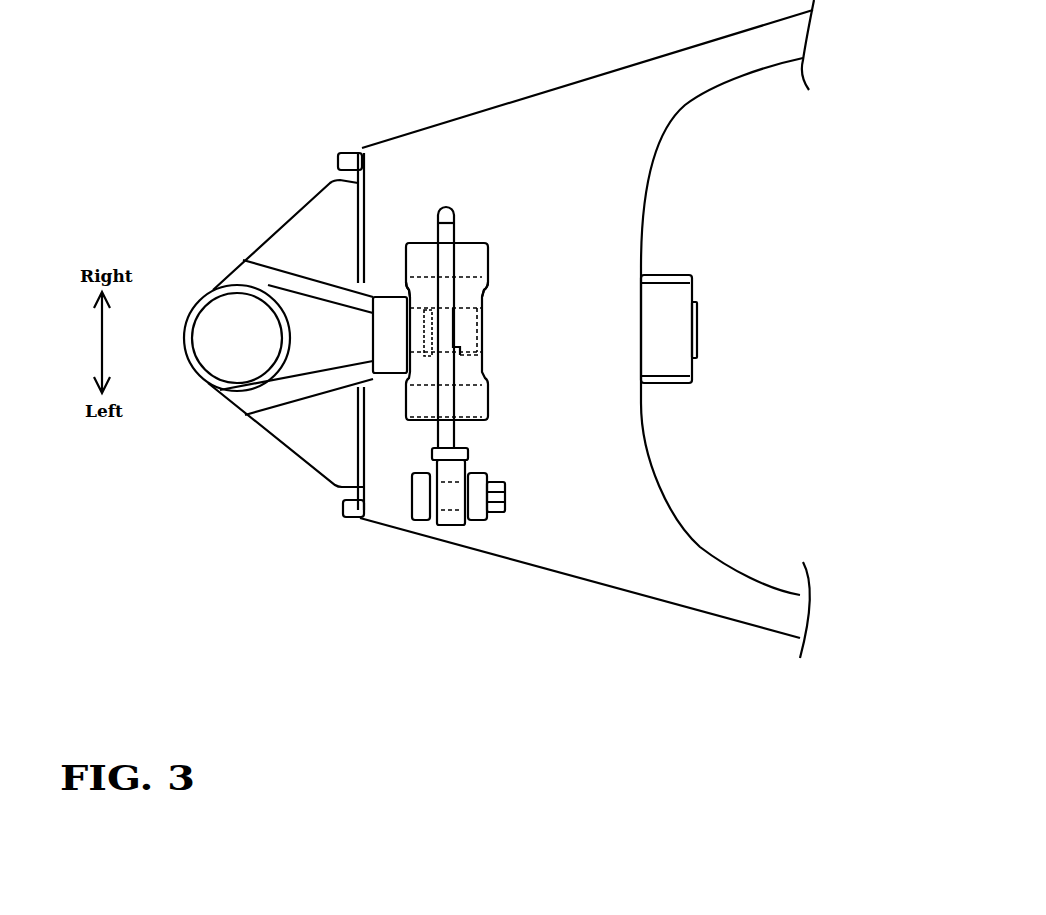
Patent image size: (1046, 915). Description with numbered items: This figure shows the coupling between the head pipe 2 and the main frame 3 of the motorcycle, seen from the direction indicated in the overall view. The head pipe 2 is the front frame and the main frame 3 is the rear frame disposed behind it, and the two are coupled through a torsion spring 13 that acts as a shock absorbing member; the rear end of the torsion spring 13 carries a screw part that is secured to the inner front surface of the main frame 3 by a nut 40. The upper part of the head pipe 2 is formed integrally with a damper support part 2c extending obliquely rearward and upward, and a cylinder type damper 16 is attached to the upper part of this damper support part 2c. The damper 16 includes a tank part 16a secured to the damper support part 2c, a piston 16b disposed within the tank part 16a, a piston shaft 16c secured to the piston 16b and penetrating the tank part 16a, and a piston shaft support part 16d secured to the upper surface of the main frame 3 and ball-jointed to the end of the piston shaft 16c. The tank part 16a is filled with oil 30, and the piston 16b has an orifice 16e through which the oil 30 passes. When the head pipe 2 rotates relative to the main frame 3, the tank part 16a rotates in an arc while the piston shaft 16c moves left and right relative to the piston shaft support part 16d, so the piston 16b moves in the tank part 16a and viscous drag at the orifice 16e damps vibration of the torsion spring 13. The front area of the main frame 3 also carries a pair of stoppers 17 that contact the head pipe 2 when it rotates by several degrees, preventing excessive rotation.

The head pipe 2 is at (188, 348).
The damper support part 2c is at (243, 262).
The main frame 3 is at (583, 97).
The torsion spring 13 is at (697, 337).
The damper 16 is at (470, 357).
The tank part 16a is at (487, 283).
The piston 16b is at (470, 326).
The piston shaft 16c is at (448, 228).
The piston shaft support part 16d is at (485, 512).
The orifice 16e is at (432, 308).
The stoppers 17 is at (348, 160).
The oil 30 is at (473, 373).
The nut 40 is at (670, 297).